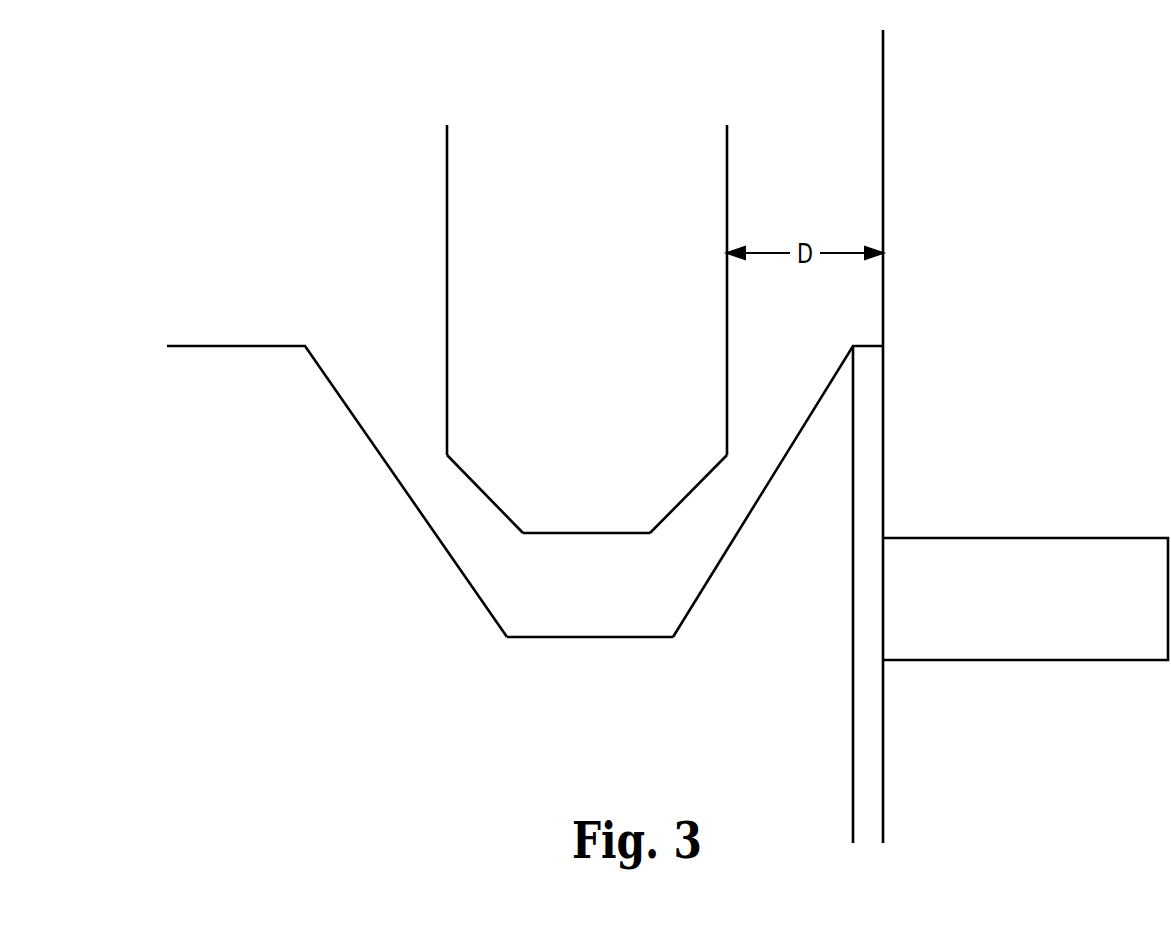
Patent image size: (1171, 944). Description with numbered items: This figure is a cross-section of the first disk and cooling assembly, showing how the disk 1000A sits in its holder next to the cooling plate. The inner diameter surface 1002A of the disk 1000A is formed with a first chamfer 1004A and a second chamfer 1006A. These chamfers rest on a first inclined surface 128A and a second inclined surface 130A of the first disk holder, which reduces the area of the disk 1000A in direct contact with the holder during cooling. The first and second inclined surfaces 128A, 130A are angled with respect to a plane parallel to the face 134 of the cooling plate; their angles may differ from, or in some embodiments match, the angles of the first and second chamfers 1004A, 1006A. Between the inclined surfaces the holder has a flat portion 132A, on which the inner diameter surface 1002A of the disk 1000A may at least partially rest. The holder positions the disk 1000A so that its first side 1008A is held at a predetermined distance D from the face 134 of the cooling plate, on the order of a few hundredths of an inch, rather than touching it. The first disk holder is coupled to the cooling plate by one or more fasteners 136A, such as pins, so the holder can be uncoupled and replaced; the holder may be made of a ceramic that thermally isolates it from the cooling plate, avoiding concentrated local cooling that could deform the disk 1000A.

The face 134 is at (883, 108).
The first side 1008A is at (727, 168).
The disk 1000A is at (615, 178).
The first chamfer 1004A is at (491, 498).
The second chamfer 1006A is at (684, 498).
The inner diameter surface 1002A is at (596, 567).
The first inclined surface 128A is at (437, 537).
The second inclined surface 130A is at (723, 557).
The flat portion 132A is at (585, 638).
The fasteners 136A is at (1042, 619).